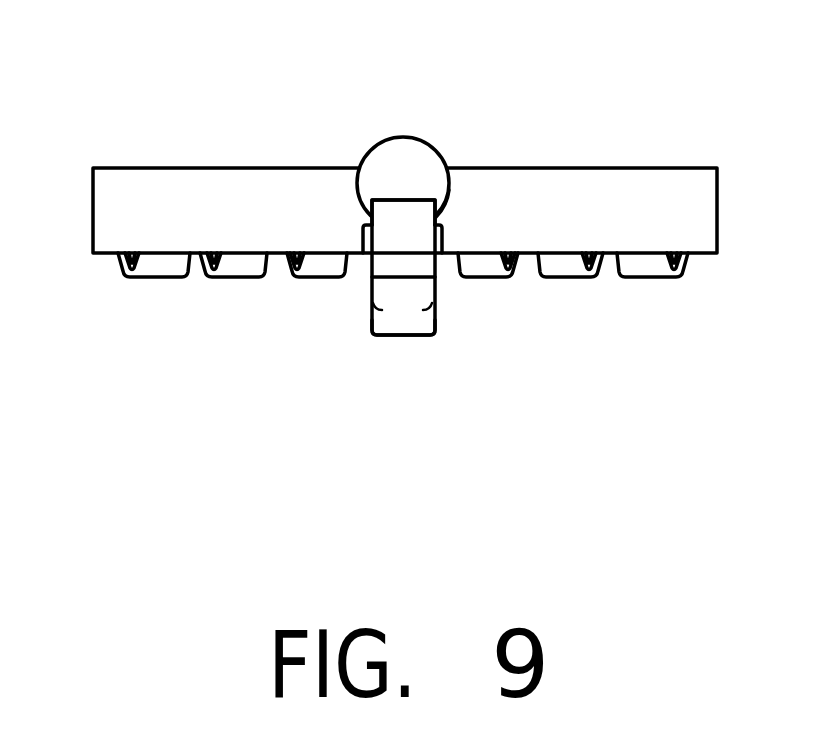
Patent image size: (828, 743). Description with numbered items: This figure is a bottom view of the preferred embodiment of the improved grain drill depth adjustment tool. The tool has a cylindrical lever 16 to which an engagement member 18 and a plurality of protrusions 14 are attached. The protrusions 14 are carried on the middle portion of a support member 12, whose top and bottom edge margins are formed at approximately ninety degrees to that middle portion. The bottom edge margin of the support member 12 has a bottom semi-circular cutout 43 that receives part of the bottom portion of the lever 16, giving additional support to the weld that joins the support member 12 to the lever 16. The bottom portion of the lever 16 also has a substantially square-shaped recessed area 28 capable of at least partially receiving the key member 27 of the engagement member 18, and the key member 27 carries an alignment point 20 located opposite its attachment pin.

The support member 12 is at (150, 193).
The protrusions 14 is at (315, 278).
The lever 16 is at (405, 147).
The engagement member 18 is at (460, 332).
The alignment point 20 is at (397, 323).
The key member 27 is at (372, 277).
The substantially square-shaped recessed area 28 is at (368, 200).
The bottom semi-circular cutout 43 is at (452, 190).